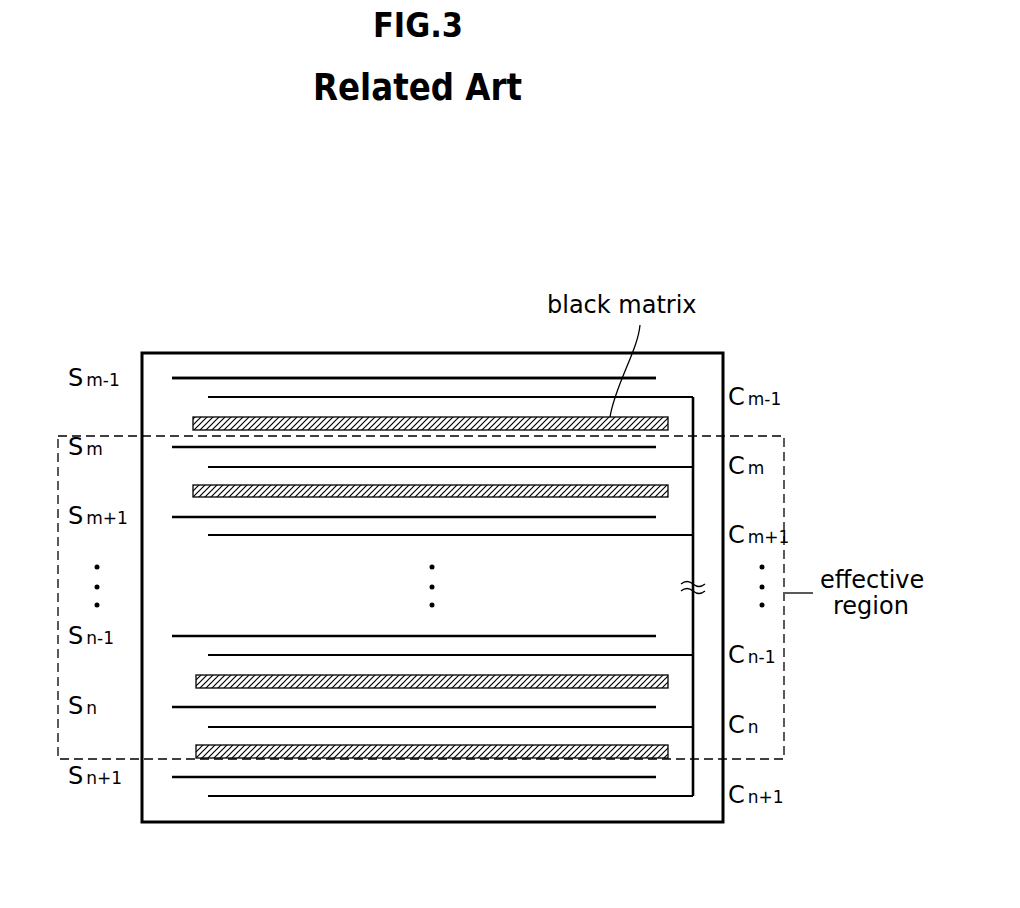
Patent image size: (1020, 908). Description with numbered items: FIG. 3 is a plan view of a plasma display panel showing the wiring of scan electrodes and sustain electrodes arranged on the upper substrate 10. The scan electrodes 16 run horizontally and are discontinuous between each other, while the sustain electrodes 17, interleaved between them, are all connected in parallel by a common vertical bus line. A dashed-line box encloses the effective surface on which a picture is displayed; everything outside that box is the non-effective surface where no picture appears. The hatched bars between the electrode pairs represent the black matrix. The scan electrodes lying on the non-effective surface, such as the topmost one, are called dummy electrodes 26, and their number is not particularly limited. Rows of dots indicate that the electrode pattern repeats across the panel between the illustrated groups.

The substrate 10 is at (395, 353).
The gate lines 16 is at (628, 447).
The data lines 17 is at (480, 395).
The dummy electrodes 26 is at (230, 380).